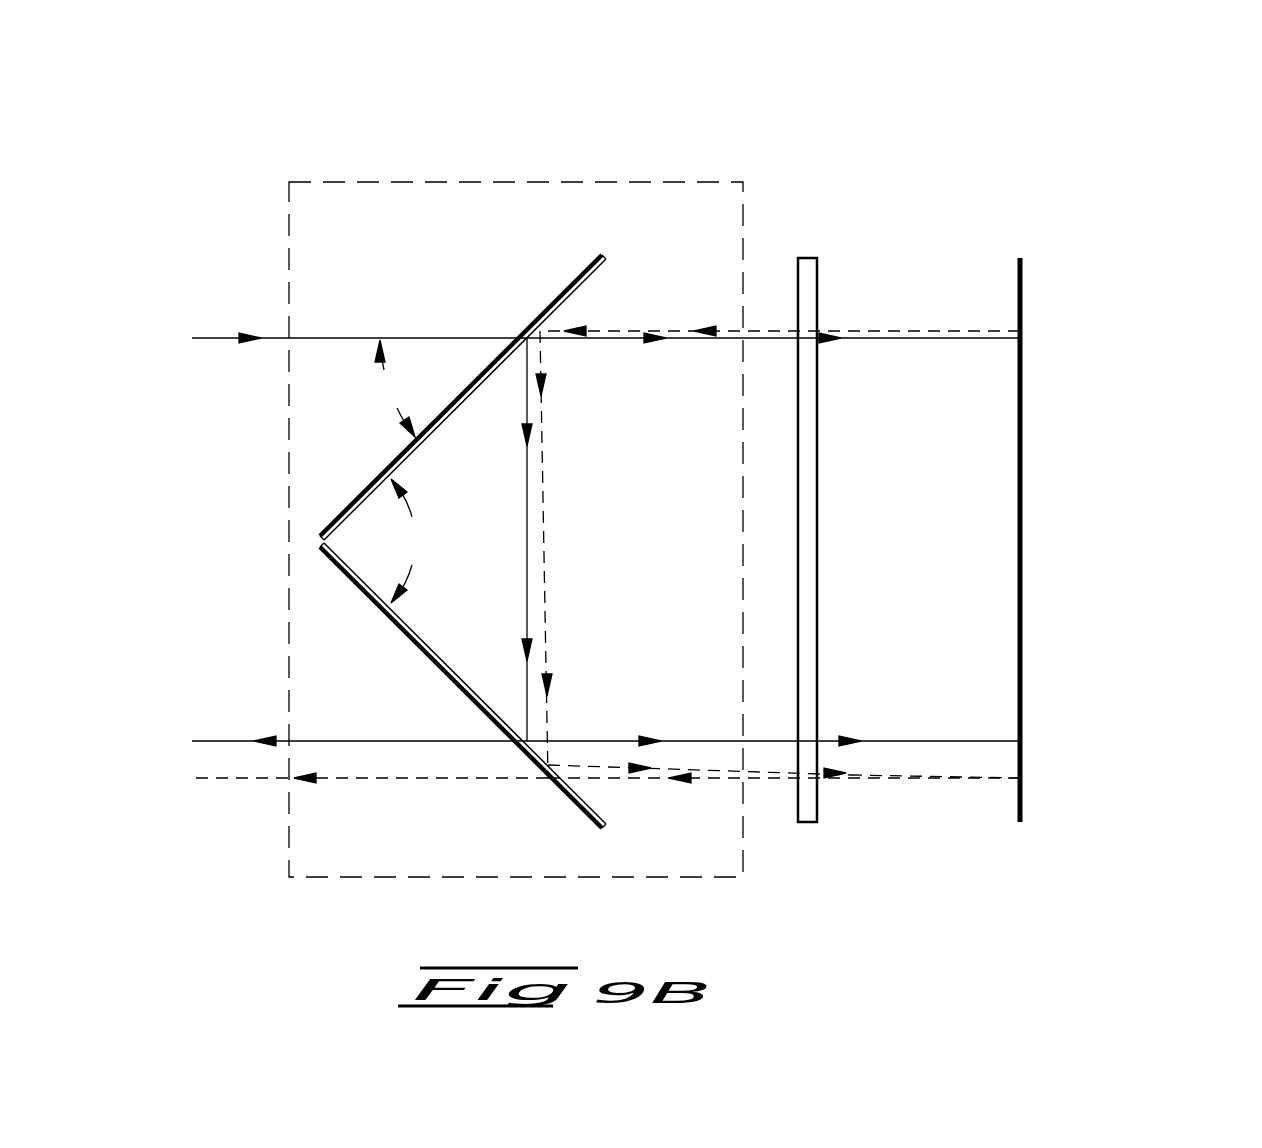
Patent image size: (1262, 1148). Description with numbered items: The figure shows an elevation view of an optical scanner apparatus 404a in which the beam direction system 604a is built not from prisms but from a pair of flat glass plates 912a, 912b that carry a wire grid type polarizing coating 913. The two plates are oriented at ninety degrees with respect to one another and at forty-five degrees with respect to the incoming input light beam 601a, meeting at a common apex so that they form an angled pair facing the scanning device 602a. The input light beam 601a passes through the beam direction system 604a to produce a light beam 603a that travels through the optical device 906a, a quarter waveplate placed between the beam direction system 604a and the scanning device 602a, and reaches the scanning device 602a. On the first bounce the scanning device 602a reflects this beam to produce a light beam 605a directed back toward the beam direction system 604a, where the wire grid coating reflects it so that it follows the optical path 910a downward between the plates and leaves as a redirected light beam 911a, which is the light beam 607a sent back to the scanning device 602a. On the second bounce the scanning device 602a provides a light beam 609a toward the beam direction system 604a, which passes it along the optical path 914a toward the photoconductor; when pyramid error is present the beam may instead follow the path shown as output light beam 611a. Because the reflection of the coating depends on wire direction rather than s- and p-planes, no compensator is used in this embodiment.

The optical scanner apparatus 404a is at (1068, 138).
The beam direction system 604a is at (760, 170).
The flat glass plate 912a is at (697, 255).
The flat glass plate 912b is at (508, 625).
The wire grid type polarizing coating 913 is at (362, 487).
The input light beam 601a is at (217, 338).
The light beam 603a is at (980, 410).
The light beam 605a is at (960, 323).
The optical path 910a is at (527, 590).
The redirected light beam 911a is at (958, 741).
The optical path 914a is at (236, 741).
The light beam 607a is at (918, 717).
The light beam 609a is at (930, 778).
The output light beam 611a is at (250, 778).
The optical device 906a is at (925, 885).
The scanning device 602a is at (1020, 271).